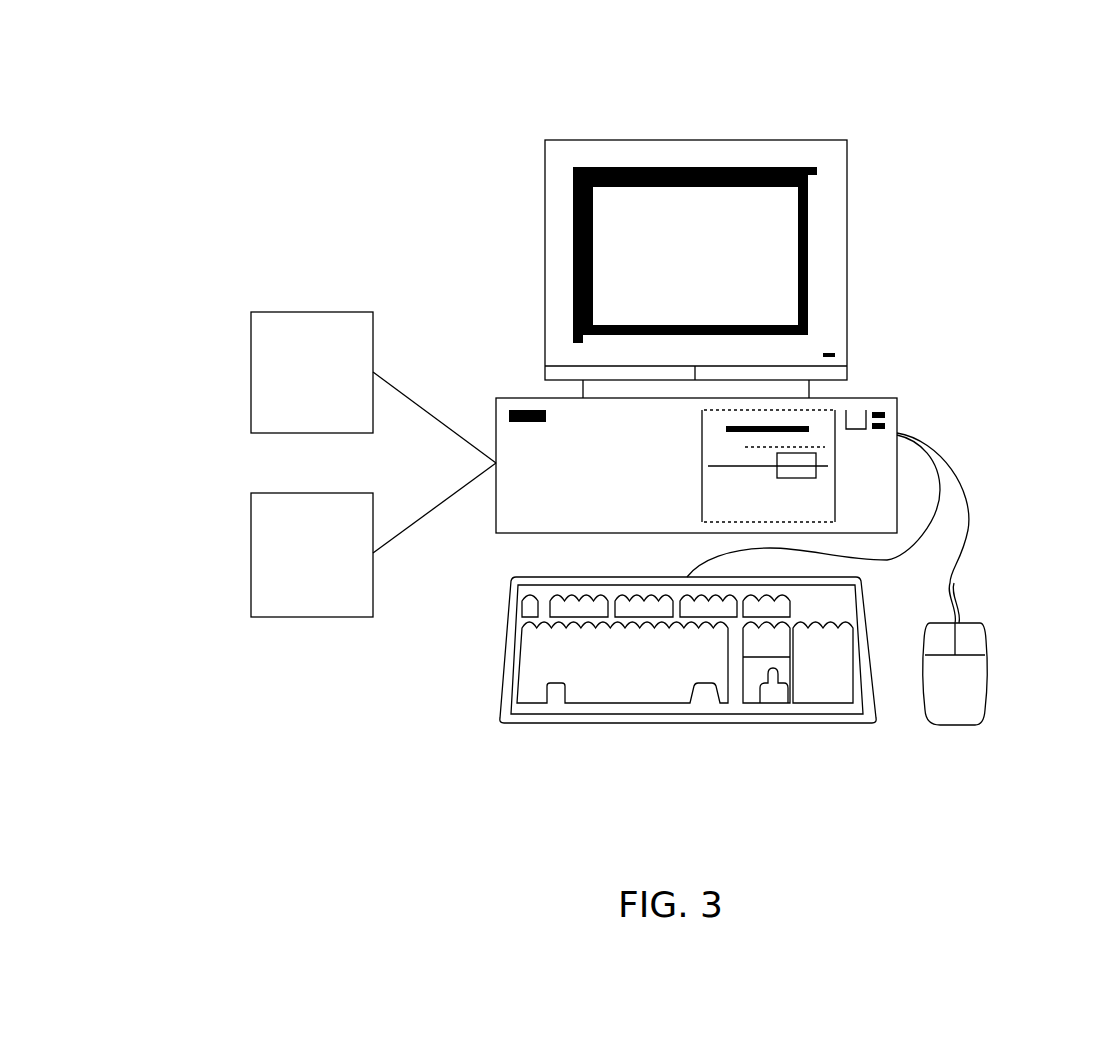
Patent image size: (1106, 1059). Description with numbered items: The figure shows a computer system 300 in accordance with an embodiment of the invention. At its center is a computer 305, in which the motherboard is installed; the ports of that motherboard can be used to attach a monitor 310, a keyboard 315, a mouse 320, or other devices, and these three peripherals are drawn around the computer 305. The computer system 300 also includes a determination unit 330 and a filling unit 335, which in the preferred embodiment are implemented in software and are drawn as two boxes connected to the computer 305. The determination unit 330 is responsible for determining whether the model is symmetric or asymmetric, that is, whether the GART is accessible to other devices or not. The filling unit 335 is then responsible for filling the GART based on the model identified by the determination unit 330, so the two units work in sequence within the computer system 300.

The computer system 300 is at (447, 65).
The computer 305 is at (864, 398).
The monitor 310 is at (648, 140).
The keyboard 315 is at (605, 723).
The mouse 320 is at (985, 677).
The determination unit 330 is at (251, 370).
The filling unit 335 is at (251, 552).